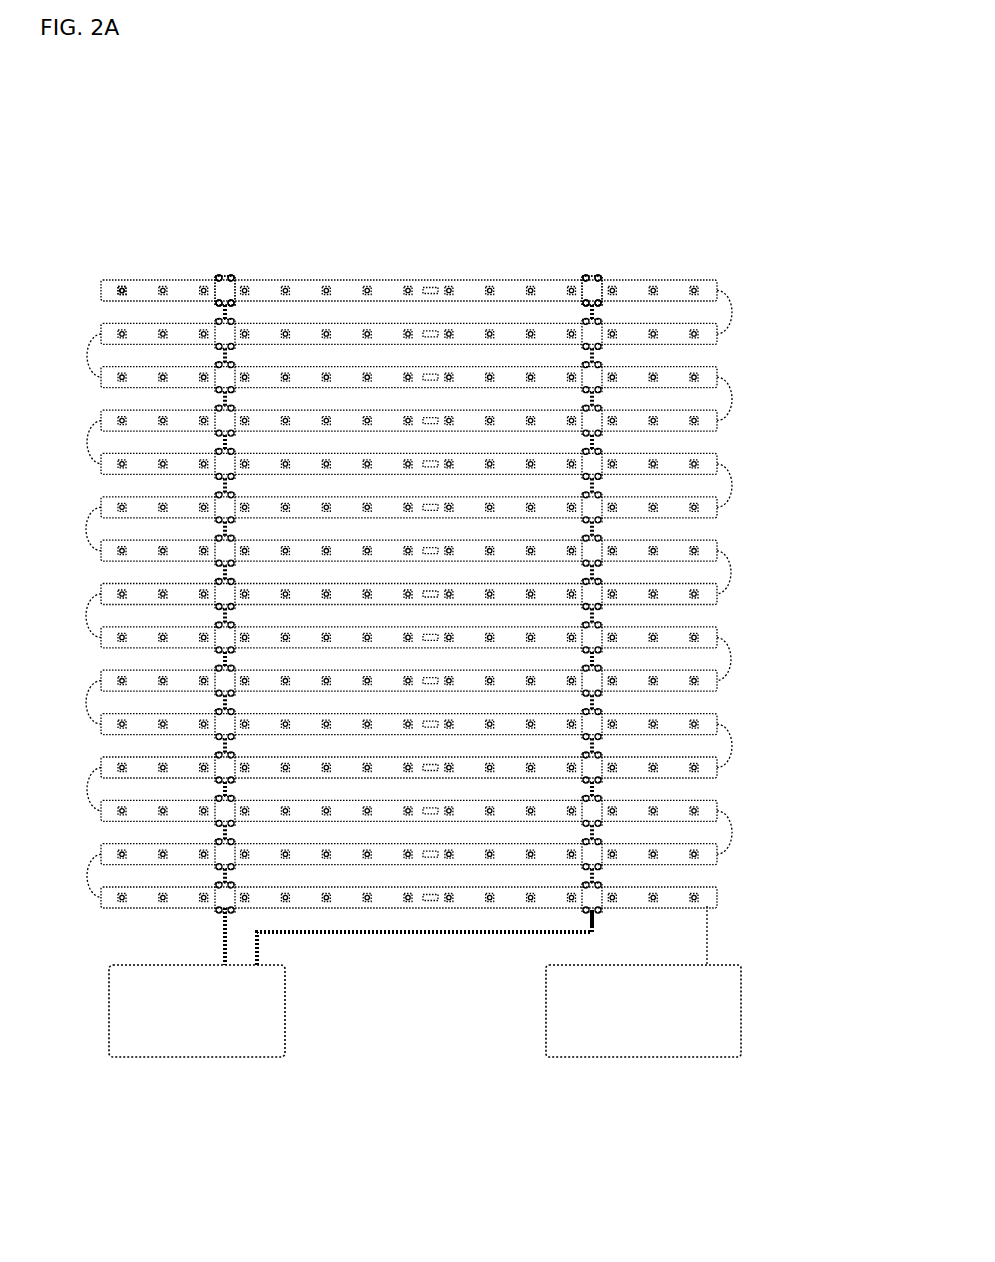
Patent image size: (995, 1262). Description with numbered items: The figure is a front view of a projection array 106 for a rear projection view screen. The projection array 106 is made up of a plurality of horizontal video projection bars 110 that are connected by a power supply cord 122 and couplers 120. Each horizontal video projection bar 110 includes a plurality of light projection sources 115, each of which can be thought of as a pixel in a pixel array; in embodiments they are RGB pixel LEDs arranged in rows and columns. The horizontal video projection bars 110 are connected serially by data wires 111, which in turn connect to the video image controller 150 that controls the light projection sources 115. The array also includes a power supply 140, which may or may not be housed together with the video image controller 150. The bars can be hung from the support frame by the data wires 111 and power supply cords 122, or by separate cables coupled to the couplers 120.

The projection array 106 is at (405, 190).
The horizontal video projection bar 110 is at (742, 286).
The data wire 111 is at (87, 357).
The light projection source 115 is at (122, 290).
The coupler 120 is at (233, 258).
The power supply cord 122 is at (210, 307).
The power supply 140 is at (140, 1057).
The video image controller 150 is at (643, 1068).